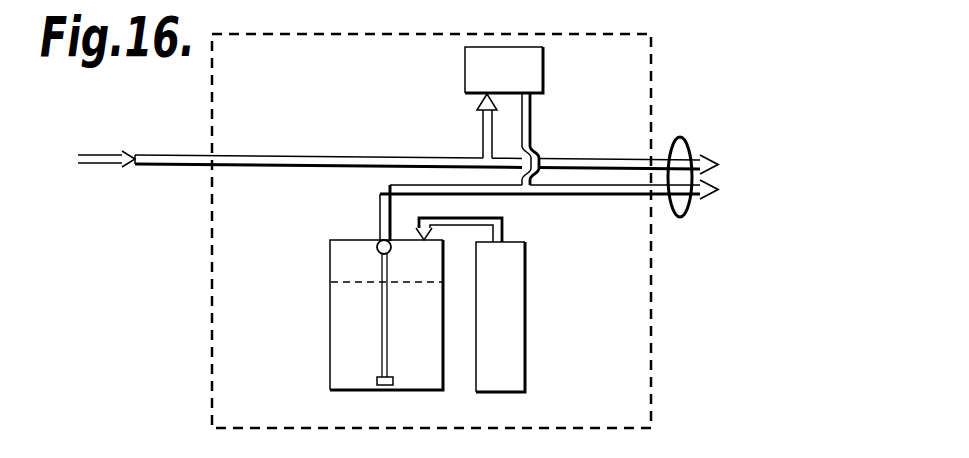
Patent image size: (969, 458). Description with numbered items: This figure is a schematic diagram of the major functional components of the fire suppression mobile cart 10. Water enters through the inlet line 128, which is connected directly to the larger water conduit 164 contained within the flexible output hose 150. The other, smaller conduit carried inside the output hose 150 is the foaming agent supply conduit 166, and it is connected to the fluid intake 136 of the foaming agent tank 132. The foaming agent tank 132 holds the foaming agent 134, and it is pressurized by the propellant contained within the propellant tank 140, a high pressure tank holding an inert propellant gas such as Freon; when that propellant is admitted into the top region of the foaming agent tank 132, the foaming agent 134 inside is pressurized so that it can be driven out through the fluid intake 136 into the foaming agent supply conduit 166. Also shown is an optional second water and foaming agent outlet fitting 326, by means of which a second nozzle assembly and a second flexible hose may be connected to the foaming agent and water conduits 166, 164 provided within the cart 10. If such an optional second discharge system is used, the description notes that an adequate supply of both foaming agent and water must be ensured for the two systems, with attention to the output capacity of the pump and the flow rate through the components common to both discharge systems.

The cart 10 is at (628, 35).
The inlet line 128 is at (180, 167).
The foaming agent tank 132 is at (346, 248).
The foaming agent 134 is at (340, 304).
The fluid intake 136 is at (378, 384).
The propellant tank 140 is at (520, 283).
The flexible output hose 150 is at (680, 137).
The water conduit 164 is at (483, 128).
The foaming agent supply conduit 166 is at (531, 125).
The second water and foaming agent outlet fitting 326 is at (543, 66).